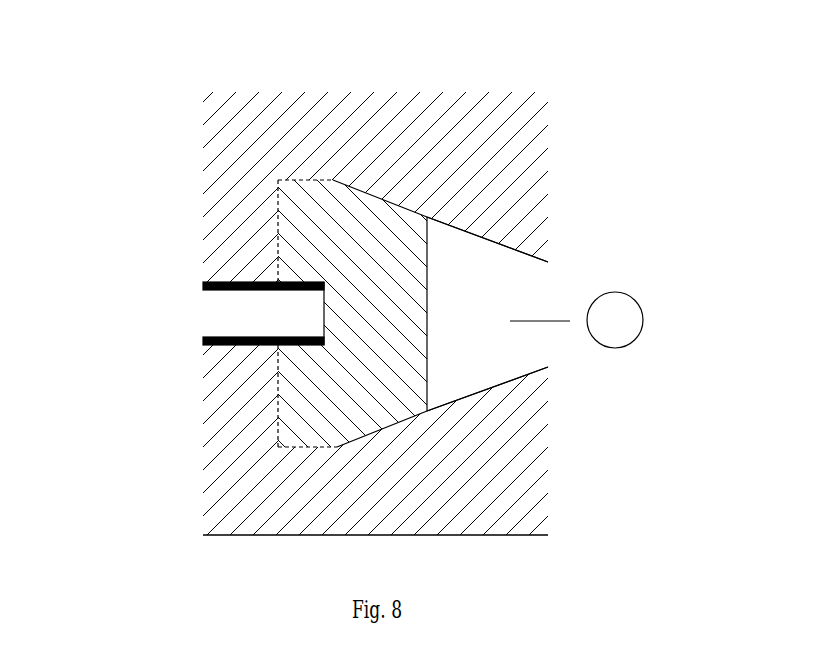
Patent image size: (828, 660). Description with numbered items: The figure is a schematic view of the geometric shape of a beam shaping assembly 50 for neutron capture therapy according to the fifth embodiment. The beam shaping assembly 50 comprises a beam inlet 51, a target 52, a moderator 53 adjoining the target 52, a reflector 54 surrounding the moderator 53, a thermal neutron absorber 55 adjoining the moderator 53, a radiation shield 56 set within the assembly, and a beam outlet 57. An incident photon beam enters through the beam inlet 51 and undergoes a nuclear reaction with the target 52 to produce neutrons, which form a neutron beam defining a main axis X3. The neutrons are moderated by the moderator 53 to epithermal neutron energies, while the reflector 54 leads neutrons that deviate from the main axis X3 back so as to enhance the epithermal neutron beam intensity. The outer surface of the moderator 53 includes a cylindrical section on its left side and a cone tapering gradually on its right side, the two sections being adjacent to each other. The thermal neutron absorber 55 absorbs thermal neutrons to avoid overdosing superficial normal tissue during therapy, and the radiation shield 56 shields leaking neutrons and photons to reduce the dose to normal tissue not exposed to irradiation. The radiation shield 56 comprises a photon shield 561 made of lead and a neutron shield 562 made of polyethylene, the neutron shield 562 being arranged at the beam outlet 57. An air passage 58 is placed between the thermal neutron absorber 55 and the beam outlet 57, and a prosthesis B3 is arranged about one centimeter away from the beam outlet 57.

The beam shaping assembly 50 is at (138, 128).
The beam inlet 51 is at (207, 302).
The target 52 is at (323, 313).
The moderator 53 is at (333, 370).
The reflector 54 is at (228, 434).
The thermal neutron absorber 55 is at (427, 316).
The radiation shield 56 is at (568, 120).
The photon shield 561 is at (500, 150).
The neutron shield 562 is at (547, 219).
The beam outlet 57 is at (525, 350).
The air passage 58 is at (458, 268).
The main axis X3 is at (532, 321).
The prosthesis B3 is at (616, 292).